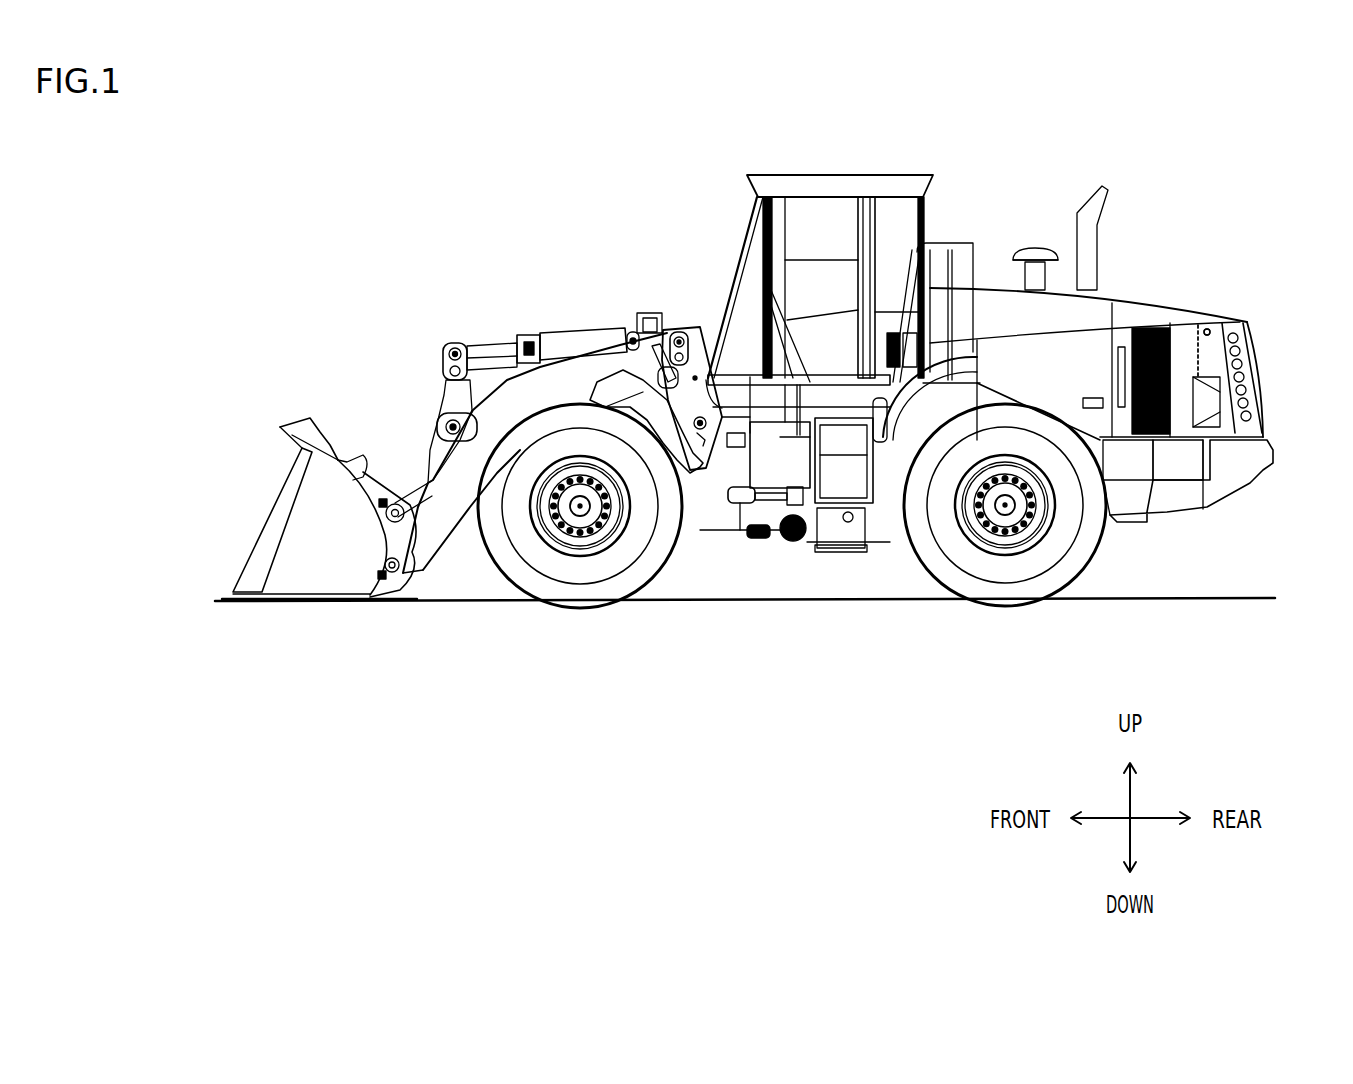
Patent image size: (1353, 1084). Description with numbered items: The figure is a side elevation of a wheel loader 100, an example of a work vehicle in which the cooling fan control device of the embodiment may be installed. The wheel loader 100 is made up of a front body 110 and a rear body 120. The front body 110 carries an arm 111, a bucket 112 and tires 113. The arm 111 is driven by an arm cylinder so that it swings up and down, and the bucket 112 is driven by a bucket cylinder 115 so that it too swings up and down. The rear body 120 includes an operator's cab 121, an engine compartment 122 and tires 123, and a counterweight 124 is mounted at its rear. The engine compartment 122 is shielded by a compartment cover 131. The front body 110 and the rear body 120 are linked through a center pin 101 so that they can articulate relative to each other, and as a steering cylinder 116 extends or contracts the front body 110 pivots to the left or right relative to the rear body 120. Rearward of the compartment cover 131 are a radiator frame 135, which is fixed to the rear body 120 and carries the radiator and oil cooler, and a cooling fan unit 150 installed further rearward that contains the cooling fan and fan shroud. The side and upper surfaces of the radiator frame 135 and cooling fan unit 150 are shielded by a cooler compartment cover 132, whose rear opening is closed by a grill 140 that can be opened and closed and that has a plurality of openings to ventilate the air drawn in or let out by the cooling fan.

The wheel loader 100 is at (553, 192).
The center pin 101 is at (793, 547).
The front body 110 is at (697, 330).
The arm 111 is at (443, 487).
The bucket 112 is at (331, 473).
The tires 113 is at (527, 583).
The bucket cylinder 115 is at (585, 335).
The steering cylinder 116 is at (735, 500).
The rear body 120 is at (1173, 512).
The operator's cab 121 is at (823, 207).
The engine compartment 122 is at (1023, 337).
The tires 123 is at (1057, 580).
The counterweight 124 is at (1250, 470).
The compartment cover 131 is at (1095, 345).
The cooler compartment cover 132 is at (1197, 327).
The radiator frame 135 is at (1218, 330).
The grill 140 is at (1243, 325).
The cooling fan unit 150 is at (1218, 330).